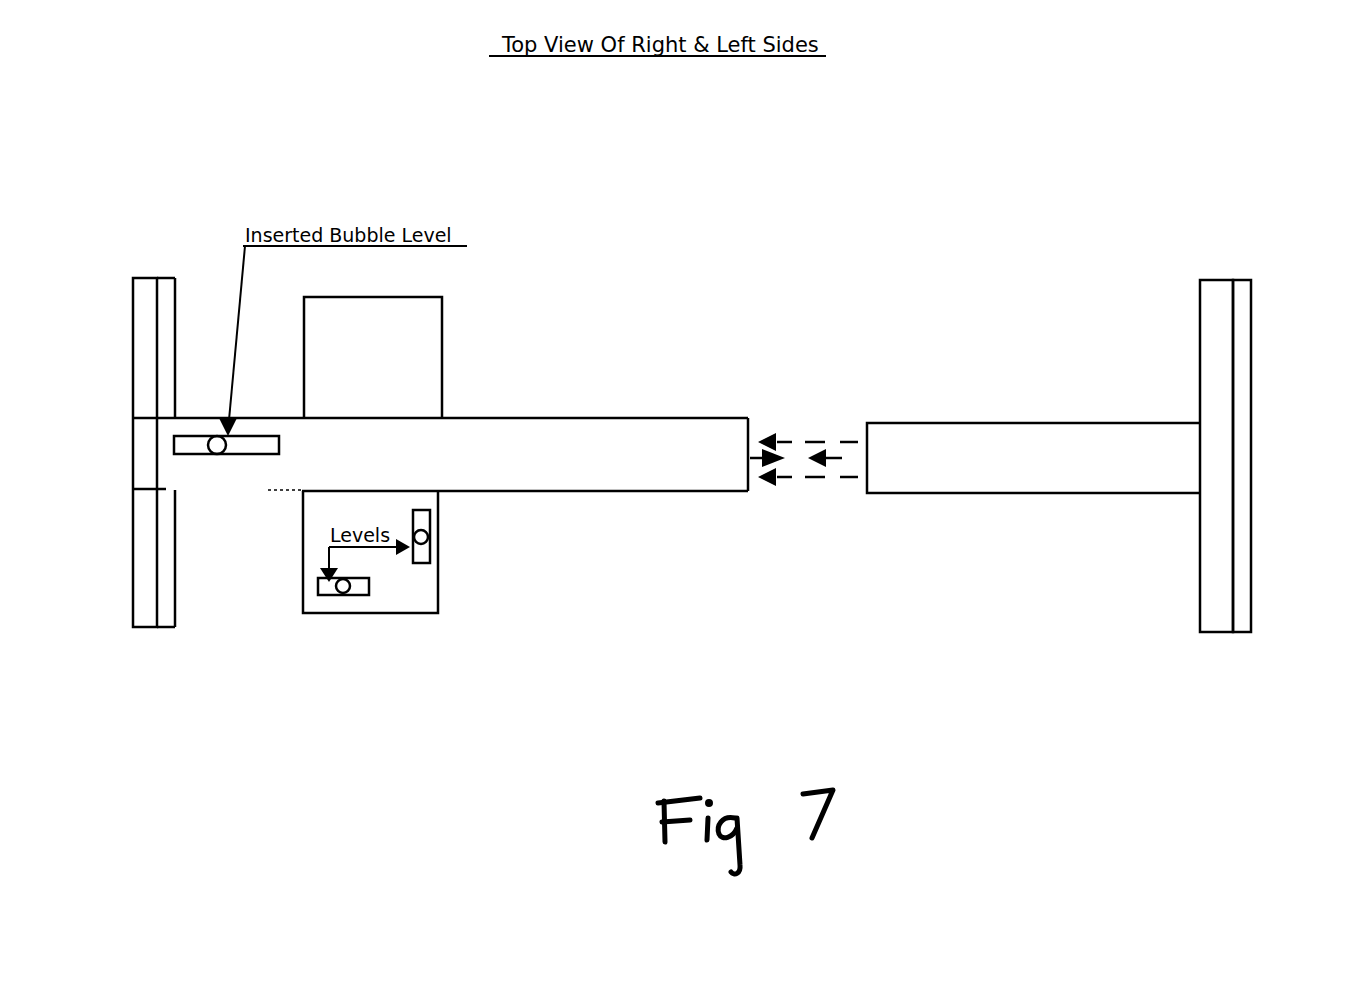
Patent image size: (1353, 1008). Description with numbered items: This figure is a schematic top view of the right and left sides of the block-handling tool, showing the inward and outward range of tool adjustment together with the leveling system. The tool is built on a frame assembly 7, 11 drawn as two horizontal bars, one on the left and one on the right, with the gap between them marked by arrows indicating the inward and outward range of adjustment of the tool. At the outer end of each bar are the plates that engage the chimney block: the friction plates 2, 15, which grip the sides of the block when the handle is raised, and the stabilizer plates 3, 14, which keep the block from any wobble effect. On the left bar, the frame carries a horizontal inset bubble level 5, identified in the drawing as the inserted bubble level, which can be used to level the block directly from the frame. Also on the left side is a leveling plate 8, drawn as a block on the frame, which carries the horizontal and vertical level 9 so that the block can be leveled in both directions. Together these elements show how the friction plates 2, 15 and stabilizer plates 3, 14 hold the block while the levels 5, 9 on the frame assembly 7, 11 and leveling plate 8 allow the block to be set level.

The friction plate 2 is at (145, 555).
The stabilizer plate 3 is at (167, 575).
The horizontal inset bubble level 5 is at (245, 442).
The frame assembly 7 is at (593, 447).
The leveling plate 8 is at (310, 605).
The horizontal/vertical level 9 is at (375, 596).
The frame assembly 11 is at (928, 445).
The stabilizer plate 14 is at (1213, 587).
The friction plate 15 is at (1255, 573).